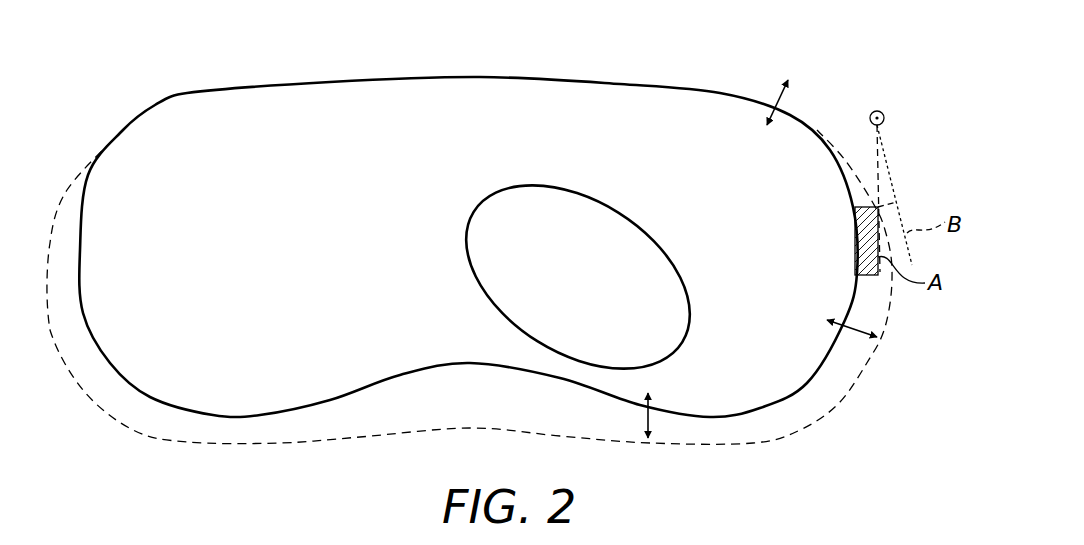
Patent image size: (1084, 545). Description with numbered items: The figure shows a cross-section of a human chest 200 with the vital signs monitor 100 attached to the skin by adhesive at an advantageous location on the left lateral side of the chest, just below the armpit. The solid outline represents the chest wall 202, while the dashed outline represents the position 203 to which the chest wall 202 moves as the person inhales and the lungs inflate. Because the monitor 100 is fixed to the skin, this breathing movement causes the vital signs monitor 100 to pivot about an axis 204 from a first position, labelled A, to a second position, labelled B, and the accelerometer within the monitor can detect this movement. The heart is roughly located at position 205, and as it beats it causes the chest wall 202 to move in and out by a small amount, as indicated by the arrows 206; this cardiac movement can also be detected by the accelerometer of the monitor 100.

The vital signs monitor 100 is at (865, 238).
The human chest 200 is at (240, 245).
The chest wall 202 is at (730, 413).
The position 203 is at (802, 428).
The axis 204 is at (877, 110).
The position 205 is at (577, 276).
The arrows 206 is at (777, 97).